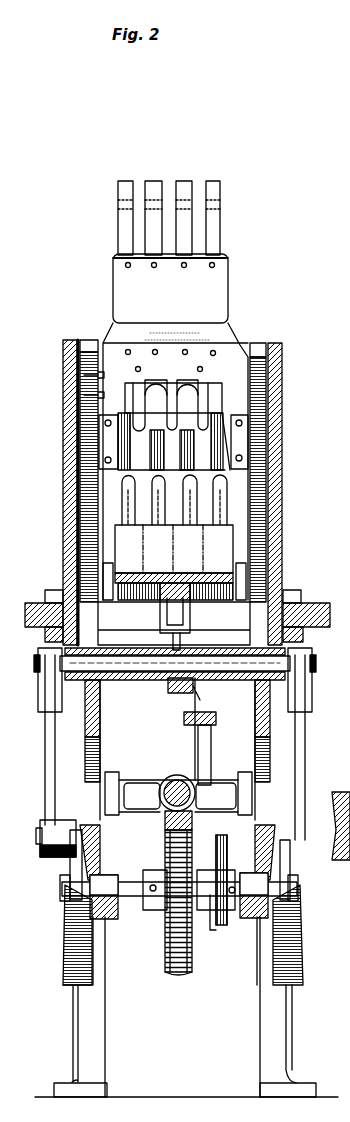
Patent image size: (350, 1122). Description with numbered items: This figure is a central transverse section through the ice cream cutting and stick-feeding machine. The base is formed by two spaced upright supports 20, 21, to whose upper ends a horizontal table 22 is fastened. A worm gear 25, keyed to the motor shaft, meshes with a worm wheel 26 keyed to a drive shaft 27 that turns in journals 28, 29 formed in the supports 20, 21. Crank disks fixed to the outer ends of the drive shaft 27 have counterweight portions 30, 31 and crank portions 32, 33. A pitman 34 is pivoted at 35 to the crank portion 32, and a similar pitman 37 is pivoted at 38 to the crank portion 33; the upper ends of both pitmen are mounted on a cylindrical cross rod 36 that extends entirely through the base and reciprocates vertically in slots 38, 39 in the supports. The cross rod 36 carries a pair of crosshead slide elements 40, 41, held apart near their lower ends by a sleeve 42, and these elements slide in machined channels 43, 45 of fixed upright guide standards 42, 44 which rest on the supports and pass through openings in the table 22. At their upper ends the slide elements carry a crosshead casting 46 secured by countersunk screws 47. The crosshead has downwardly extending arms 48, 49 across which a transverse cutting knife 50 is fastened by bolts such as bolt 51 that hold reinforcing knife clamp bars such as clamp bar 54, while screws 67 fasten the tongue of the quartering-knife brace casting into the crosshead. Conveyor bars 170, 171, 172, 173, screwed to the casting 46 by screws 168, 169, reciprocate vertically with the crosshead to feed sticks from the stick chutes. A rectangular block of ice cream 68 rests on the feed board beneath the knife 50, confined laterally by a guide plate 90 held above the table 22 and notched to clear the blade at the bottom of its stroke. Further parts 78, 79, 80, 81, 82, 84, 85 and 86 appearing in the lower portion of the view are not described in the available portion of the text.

The upright support 20 is at (78, 1022).
The upright support 21 is at (278, 1026).
The horizontal table 22 is at (308, 603).
The worm gear 25 is at (173, 780).
The worm wheel 26 is at (166, 964).
The drive shaft 27 is at (130, 905).
The journal 28 is at (92, 912).
The journal 29 is at (252, 920).
The counterweight portion 30 is at (66, 955).
The counterweight portion 31 is at (287, 945).
The crank portion 32 is at (70, 872).
The crank portion 33 is at (286, 858).
The pitman 34 is at (50, 782).
The pivot 35 is at (40, 845).
The cross rod 36 is at (62, 692).
The pitman 37 is at (306, 714).
The pivot 38 is at (80, 726).
The vertical slot 39 is at (290, 705).
The crosshead slide element 40 is at (62, 527).
The crosshead slide element 41 is at (264, 480).
The upright guide standard 42 is at (70, 439).
The machined channel 43 is at (86, 343).
The upright guide standard 44 is at (276, 408).
The machined channel 45 is at (258, 345).
The crosshead casting 46 is at (220, 330).
The countersunk screws 47 is at (70, 399).
The downwardly extending arm 48 is at (62, 425).
The downwardly extending arm 49 is at (250, 442).
The transverse cutting knife 50 is at (150, 478).
The bolt 51 is at (135, 472).
The reinforcing knife clamp bar 54 is at (104, 452).
The screws 67 is at (197, 368).
The block of ice cream 68 is at (226, 533).
The pawl 78 is at (236, 852).
The pin 79 is at (213, 930).
The rod 80 is at (211, 744).
The lever arm 81 is at (256, 800).
The link 82 is at (207, 945).
The bracket 84 is at (196, 700).
The stem 85 is at (182, 640).
The clamp 86 is at (189, 610).
The guide plate 90 is at (233, 572).
The screws 168 is at (202, 283).
The screws 169 is at (153, 349).
The conveyor bar 170 is at (126, 183).
The conveyor bar 171 is at (152, 183).
The conveyor bar 172 is at (184, 183).
The conveyor bar 173 is at (215, 181).